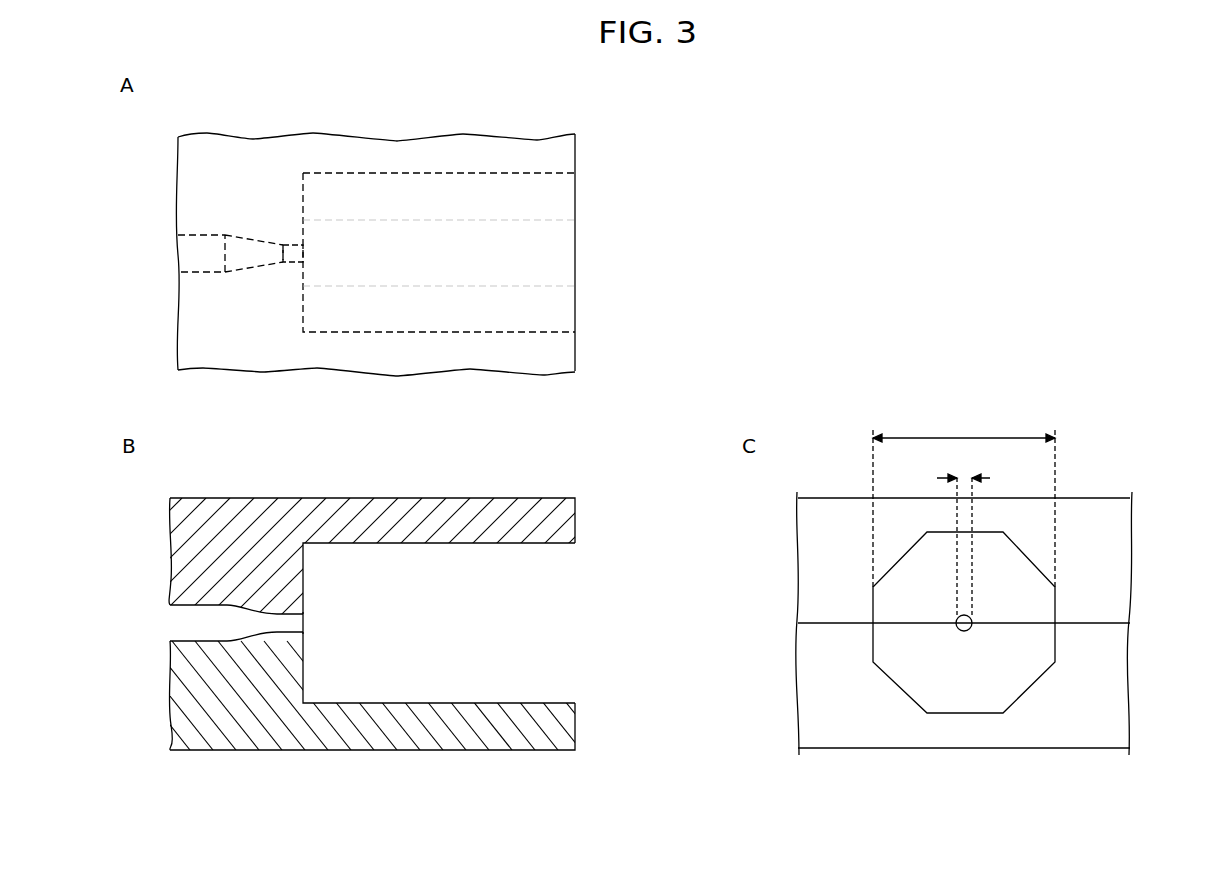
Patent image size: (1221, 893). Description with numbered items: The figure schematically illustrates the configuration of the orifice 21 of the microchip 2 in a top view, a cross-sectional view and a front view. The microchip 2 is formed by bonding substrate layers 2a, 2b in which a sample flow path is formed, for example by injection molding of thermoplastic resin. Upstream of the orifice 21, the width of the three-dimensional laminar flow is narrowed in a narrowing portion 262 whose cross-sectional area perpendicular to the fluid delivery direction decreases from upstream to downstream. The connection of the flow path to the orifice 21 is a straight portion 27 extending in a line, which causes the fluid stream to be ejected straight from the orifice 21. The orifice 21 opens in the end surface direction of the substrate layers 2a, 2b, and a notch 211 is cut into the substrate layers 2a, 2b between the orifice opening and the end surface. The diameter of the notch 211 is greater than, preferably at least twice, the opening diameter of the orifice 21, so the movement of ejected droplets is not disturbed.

The microchip 2 is at (462, 136).
The substrate layer 2a is at (575, 523).
The substrate layer 2b is at (575, 722).
The orifice 21 is at (303, 251).
The straight portion 27 is at (293, 243).
The notch 211 is at (583, 543).
The narrowing portion 262 is at (250, 268).